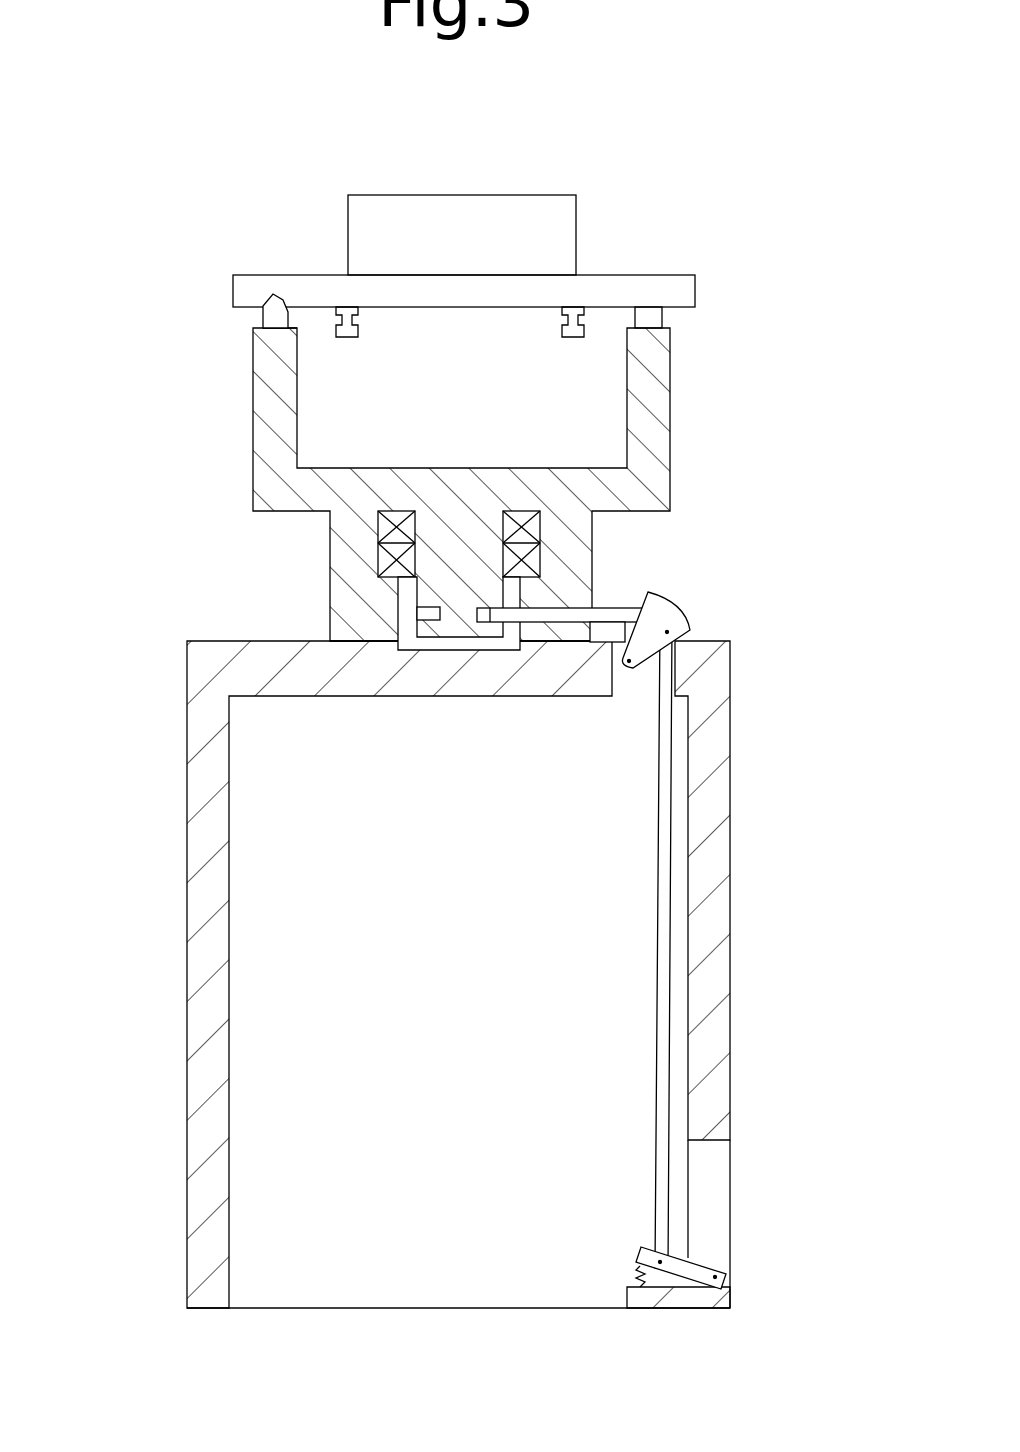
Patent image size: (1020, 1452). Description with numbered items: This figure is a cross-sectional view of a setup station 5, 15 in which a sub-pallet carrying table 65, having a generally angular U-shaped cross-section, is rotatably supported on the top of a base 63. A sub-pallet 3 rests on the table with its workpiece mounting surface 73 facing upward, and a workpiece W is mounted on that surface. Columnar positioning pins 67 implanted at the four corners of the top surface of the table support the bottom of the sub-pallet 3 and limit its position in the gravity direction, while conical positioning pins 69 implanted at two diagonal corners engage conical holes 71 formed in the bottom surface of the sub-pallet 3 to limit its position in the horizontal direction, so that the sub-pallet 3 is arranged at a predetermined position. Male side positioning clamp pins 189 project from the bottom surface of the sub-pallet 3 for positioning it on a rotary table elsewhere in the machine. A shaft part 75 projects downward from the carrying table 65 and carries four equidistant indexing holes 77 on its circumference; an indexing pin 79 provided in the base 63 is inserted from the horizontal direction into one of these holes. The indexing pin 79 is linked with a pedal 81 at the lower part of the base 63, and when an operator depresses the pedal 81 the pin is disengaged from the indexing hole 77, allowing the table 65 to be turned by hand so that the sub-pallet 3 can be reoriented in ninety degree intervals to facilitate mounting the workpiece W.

The setup station 5 is at (440, 693).
The setup station 15 is at (297, 175).
The sub-pallet 3 is at (300, 283).
The workpiece W is at (512, 208).
The workpiece mounting surface 73 is at (630, 273).
The conical positioning pin 69 is at (262, 313).
The conical hole 71 is at (290, 320).
The columnar positioning pin 67 is at (652, 320).
The male side positioning clamp pin 189 is at (575, 345).
The sub-pallet carrying table 65 is at (263, 483).
The shaft part 75 is at (477, 588).
The indexing hole 77 is at (400, 614).
The indexing pin 79 is at (608, 617).
The base 63 is at (200, 724).
The pedal 81 is at (715, 1262).